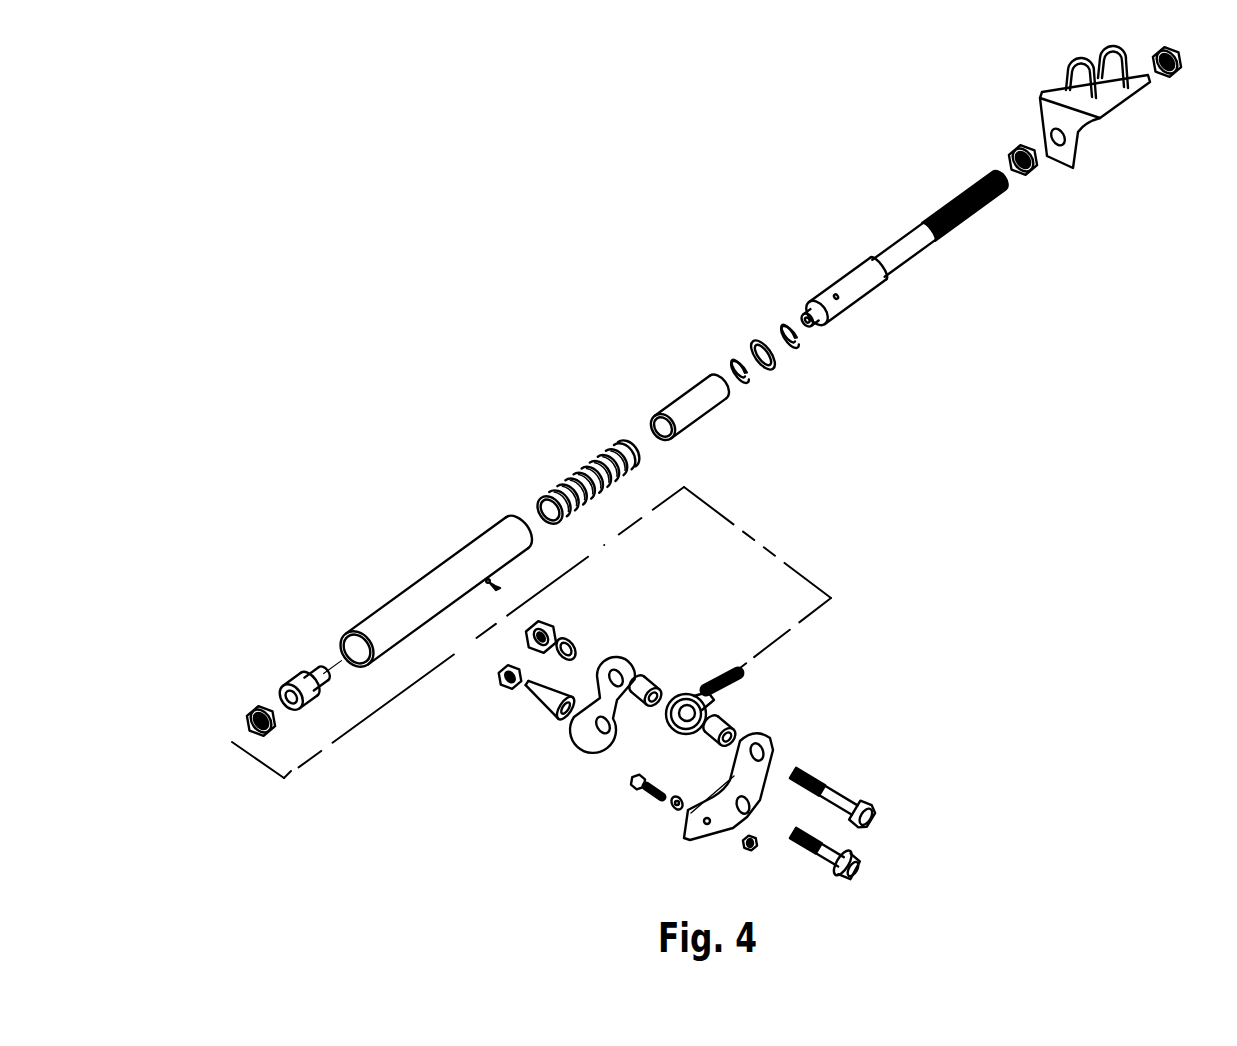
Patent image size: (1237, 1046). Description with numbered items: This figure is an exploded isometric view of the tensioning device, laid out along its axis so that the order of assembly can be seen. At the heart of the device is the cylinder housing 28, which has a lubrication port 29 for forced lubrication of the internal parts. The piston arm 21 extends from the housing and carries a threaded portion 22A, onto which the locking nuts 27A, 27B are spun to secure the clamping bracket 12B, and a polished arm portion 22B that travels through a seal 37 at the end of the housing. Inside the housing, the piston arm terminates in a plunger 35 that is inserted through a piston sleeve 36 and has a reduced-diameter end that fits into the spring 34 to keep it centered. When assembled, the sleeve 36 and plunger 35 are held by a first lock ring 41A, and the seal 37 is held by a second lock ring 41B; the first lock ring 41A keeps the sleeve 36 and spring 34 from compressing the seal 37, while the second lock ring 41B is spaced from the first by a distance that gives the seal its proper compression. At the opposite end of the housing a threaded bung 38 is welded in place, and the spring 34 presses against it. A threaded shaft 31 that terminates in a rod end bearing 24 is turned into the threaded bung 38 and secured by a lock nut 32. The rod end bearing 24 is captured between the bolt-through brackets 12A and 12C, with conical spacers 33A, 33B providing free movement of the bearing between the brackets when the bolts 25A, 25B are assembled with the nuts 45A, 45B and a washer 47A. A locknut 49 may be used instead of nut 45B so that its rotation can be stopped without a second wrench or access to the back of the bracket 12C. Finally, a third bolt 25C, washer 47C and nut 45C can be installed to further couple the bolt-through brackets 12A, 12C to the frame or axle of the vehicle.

The bolt-through bracket 12A is at (772, 740).
The clamping bracket 12B is at (1075, 162).
The bolt-through bracket 12C is at (568, 750).
The piston arm 21 is at (873, 219).
The threaded portion 22A is at (970, 223).
The polished arm portion 22B is at (905, 270).
The rod end bearing 24 is at (675, 722).
The bolt 25A is at (882, 806).
The bolt 25B is at (865, 873).
The third bolt 25C is at (632, 786).
The locking nut 27A is at (1015, 148).
The locking nut 27B is at (1178, 78).
The cylinder housing 28 is at (410, 582).
The lubrication port 29 is at (500, 592).
The threaded shaft 31 is at (735, 676).
The lock nut 32 is at (250, 708).
The conical spacer 33A is at (735, 724).
The conical spacer 33B is at (645, 678).
The spring 34 is at (573, 470).
The plunger 35 is at (845, 318).
The piston sleeve 36 is at (678, 395).
The seal 37 is at (748, 340).
The threaded bung 38 is at (295, 710).
The first lock ring 41A is at (753, 380).
The second lock ring 41B is at (798, 345).
The nut 45A is at (552, 618).
The nut 45B is at (499, 685).
The nut 45C is at (745, 850).
The washer 47A is at (579, 640).
The washer 47C is at (672, 808).
The locknut 49 is at (555, 717).